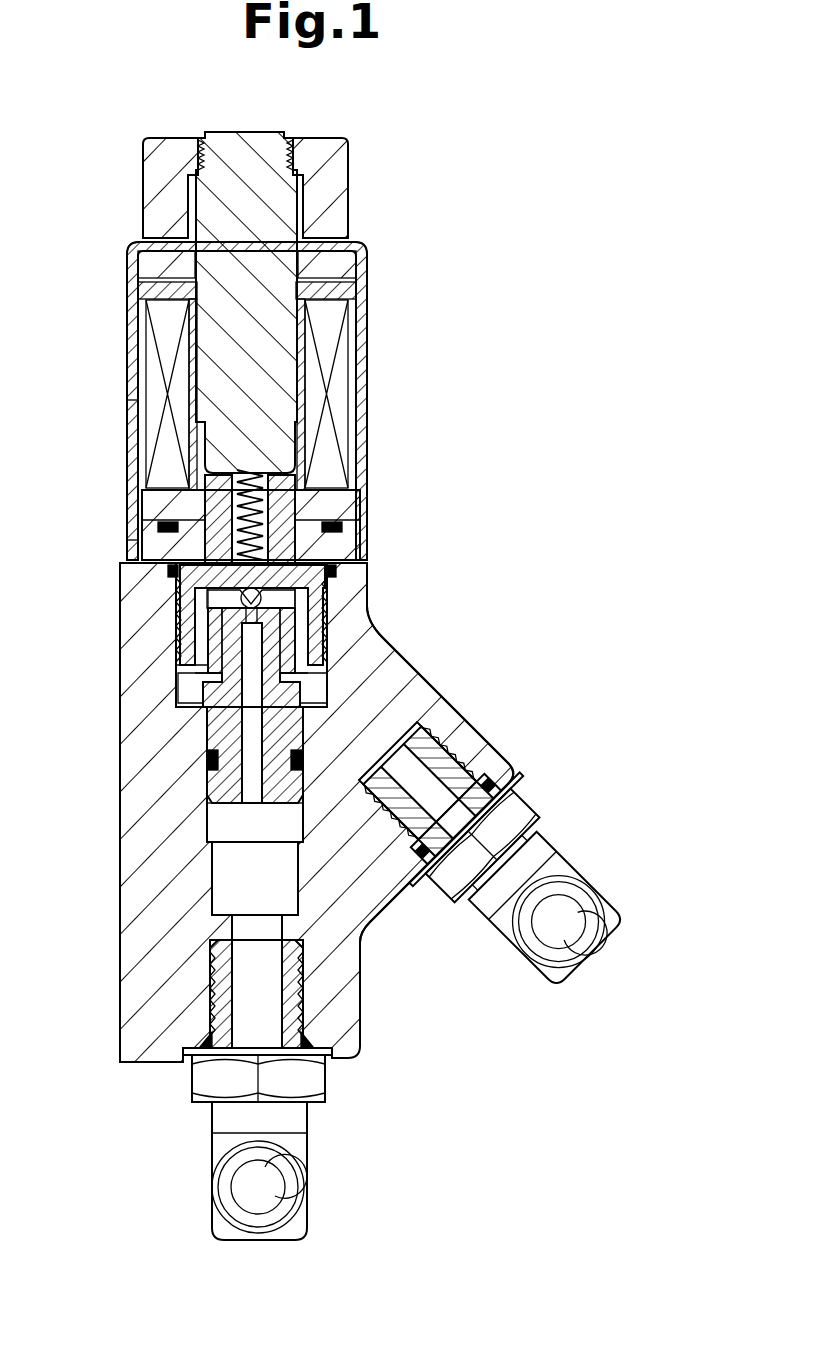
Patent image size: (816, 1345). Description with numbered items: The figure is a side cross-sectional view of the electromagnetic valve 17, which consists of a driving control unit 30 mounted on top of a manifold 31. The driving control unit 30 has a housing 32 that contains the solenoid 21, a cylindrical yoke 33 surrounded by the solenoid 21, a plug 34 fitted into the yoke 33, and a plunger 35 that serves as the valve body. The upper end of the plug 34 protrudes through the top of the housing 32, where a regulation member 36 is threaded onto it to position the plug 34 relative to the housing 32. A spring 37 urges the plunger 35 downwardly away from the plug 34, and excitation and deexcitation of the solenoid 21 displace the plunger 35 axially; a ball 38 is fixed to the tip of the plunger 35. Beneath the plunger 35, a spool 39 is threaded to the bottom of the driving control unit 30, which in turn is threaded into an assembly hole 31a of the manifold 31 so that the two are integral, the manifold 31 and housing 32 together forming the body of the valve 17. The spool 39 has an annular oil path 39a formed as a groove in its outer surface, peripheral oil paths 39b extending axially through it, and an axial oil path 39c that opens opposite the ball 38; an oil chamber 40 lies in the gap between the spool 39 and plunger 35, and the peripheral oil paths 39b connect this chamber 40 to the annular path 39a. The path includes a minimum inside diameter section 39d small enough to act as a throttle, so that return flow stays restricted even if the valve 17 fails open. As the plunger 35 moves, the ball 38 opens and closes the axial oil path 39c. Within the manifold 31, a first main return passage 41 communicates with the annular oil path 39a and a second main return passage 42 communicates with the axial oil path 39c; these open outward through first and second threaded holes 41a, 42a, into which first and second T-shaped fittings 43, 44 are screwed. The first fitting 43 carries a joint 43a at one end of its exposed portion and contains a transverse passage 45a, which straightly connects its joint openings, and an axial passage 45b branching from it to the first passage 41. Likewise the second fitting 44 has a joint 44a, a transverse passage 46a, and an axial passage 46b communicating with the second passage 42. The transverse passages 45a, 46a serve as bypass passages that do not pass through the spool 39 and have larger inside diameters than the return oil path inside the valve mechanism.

The electromagnetic valve 17 is at (392, 470).
The solenoid 21 is at (340, 400).
The driving control unit 30 is at (124, 360).
The manifold 31 is at (118, 893).
The assembly hole 31a is at (190, 690).
The housing 32 is at (136, 436).
The cylindrical yoke 33 is at (310, 299).
The plug 34 is at (250, 140).
The plunger 35 is at (348, 521).
The regulation member 36 is at (349, 166).
The spring 37 is at (248, 511).
The ball 38 is at (240, 582).
The spool 39 is at (212, 792).
The annular oil path 39a is at (212, 702).
The peripheral oil paths 39b is at (286, 628).
The axial oil path 39c is at (243, 790).
The minimum inside diameter section 39d is at (208, 617).
The oil chamber 40 is at (206, 596).
The first main return passage 41 is at (408, 663).
The first threaded hole 41a is at (482, 744).
The second main return passage 42 is at (233, 931).
The second threaded hole 42a is at (303, 997).
The first T-shaped fitting 43 is at (567, 856).
The joint of first fitting 43a is at (613, 940).
The second T-shaped fitting 44 is at (308, 1148).
The joint of second fitting 44a is at (218, 1154).
The transverse passage 45a is at (548, 938).
The axial passage 45b is at (440, 752).
The transverse passage 46a is at (280, 1197).
The axial passage 46b is at (240, 1000).